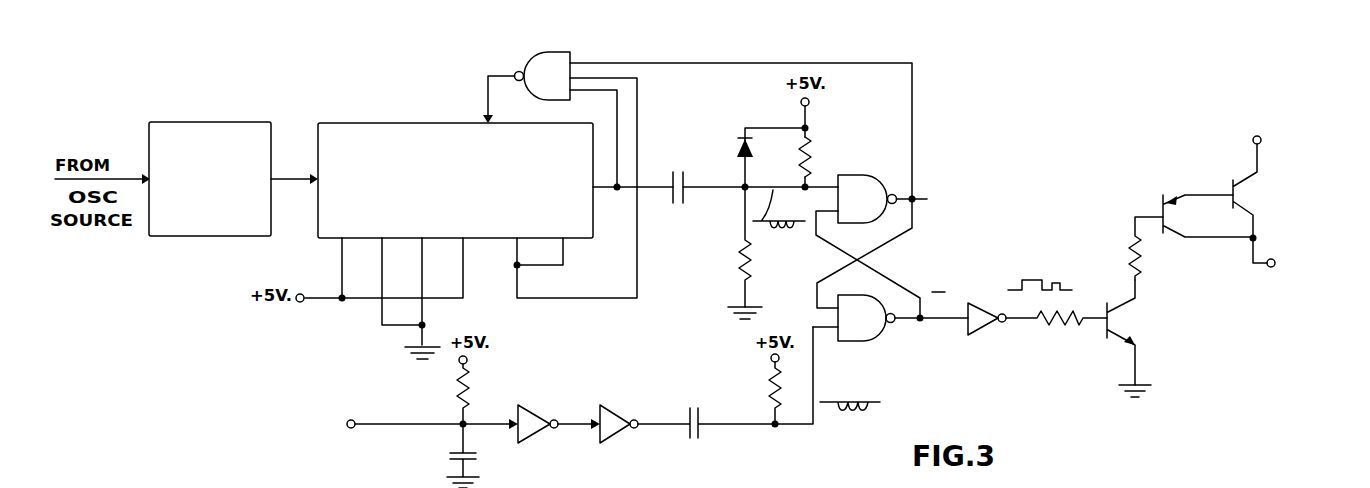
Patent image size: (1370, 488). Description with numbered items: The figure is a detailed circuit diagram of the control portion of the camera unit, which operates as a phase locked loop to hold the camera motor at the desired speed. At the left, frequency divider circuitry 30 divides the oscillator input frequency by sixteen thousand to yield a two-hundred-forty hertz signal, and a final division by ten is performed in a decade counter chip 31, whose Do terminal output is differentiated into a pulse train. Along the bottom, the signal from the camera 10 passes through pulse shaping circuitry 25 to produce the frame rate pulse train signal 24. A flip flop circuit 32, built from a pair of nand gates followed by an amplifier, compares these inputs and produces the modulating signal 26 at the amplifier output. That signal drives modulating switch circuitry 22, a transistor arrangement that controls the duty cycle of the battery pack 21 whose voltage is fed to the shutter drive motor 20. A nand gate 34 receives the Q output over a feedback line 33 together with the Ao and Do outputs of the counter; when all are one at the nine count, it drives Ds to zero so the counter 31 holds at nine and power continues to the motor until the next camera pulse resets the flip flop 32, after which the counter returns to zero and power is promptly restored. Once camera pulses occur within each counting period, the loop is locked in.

The frequency divider circuitry 30 is at (252, 122).
The decade counter integrated circuit chip 31 is at (360, 123).
The nand gate 34 is at (556, 66).
The feedback line 33 is at (710, 56).
The flip flop circuit 32 is at (950, 278).
The modulating signal 26 is at (1037, 278).
The pulse shaping circuitry 25 is at (569, 401).
The frame rate pulse train signal 24 is at (878, 400).
The modulating switch circuitry 22 is at (1186, 298).
The camera 10 is at (290, 423).
The battery pack 21 is at (1275, 116).
The shutter drive motor 20 is at (1314, 285).